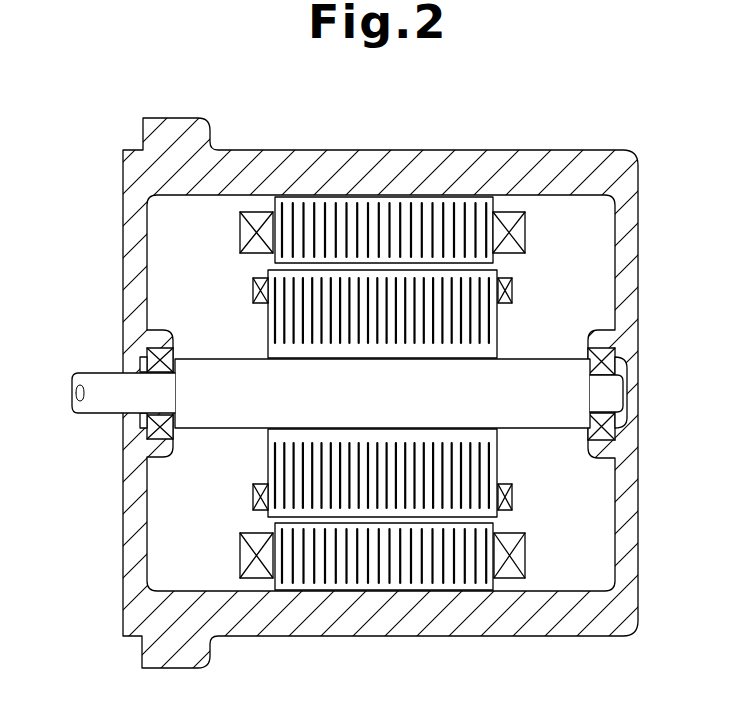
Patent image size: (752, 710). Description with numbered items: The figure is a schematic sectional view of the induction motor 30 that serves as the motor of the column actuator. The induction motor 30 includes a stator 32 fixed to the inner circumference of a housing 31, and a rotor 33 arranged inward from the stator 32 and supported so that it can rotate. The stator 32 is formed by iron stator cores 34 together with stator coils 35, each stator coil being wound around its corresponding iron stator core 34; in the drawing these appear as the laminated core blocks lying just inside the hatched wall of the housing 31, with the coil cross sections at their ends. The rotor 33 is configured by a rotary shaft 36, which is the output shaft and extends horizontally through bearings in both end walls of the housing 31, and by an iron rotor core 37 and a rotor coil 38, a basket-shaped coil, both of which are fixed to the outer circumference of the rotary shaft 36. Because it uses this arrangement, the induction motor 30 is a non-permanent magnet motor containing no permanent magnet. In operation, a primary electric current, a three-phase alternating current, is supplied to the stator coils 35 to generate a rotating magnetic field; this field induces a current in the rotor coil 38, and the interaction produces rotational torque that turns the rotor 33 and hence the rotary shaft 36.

The induction motor 30 is at (86, 141).
The housing 31 is at (560, 150).
The stator 32 is at (348, 106).
The rotor 33 is at (580, 288).
The iron stator core 34 is at (333, 212).
The stator coil 35 is at (259, 214).
The rotary shaft 36 is at (209, 366).
The iron rotor core 37 is at (497, 329).
The rotor coil 38 is at (512, 287).